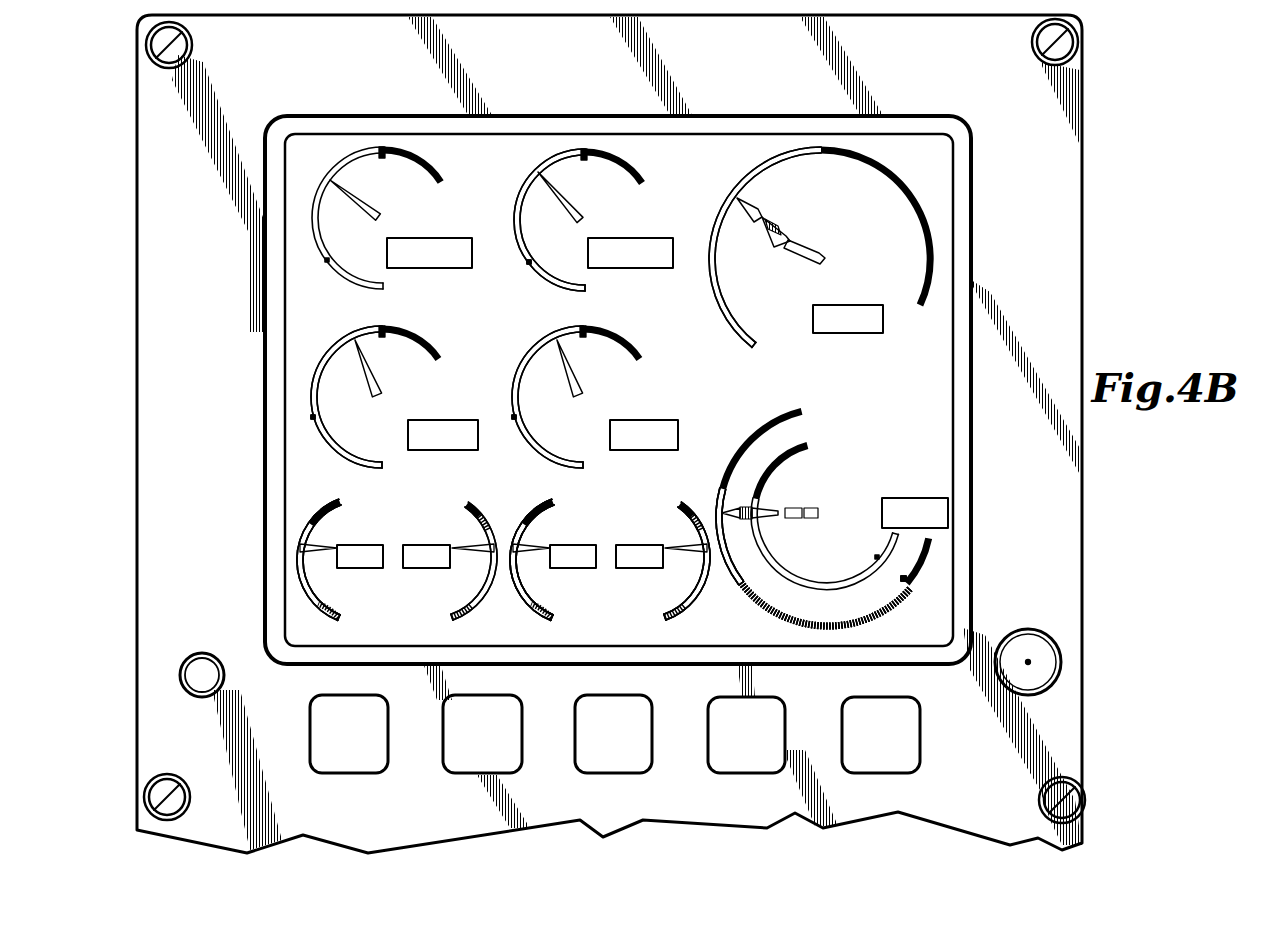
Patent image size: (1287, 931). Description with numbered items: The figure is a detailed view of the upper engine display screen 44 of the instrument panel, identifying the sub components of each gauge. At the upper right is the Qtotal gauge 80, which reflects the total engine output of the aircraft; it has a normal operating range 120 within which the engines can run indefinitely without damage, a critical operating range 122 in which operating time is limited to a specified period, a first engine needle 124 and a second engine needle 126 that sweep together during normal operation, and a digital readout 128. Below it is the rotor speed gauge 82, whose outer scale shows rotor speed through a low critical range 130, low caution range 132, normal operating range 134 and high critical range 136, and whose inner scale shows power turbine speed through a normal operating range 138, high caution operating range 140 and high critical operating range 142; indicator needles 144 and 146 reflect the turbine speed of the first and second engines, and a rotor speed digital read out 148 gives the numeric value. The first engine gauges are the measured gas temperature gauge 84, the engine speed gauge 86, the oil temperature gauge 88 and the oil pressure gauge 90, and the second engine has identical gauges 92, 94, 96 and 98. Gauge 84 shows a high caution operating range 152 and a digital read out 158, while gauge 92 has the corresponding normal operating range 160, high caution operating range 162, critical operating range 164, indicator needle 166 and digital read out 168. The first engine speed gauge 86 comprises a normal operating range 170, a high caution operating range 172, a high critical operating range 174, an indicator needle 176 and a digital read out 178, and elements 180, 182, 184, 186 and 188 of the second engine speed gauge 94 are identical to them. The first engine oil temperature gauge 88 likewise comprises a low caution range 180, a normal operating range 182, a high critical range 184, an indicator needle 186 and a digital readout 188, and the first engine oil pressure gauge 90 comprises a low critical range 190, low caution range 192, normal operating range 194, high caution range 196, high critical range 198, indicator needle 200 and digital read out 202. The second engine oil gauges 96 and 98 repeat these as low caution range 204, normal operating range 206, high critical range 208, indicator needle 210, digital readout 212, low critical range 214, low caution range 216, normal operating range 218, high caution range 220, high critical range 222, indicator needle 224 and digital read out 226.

The upper display screen 44 is at (1090, 116).
The Qtotal gauge 80 is at (890, 158).
The rotor speed gauge 82 is at (918, 590).
The first engine measured gas temperature gauge 84 is at (315, 182).
The first engine speed gauge 86 is at (318, 350).
The first engine oil temperature gauge 88 is at (300, 655).
The first engine oil pressure gauge 90 is at (470, 503).
The second engine measured gas temperature gauge 92 is at (512, 200).
The second engine speed gauge 94 is at (506, 378).
The second engine oil temperature gauge 96 is at (512, 528).
The second engine oil pressure gauge 98 is at (684, 503).
The normal operating range 120 is at (747, 170).
The critical operating range 122 is at (867, 150).
The first engine needle 124 is at (760, 200).
The second engine needle 126 is at (776, 217).
The digital readout 128 is at (884, 312).
The low critical range 130 is at (932, 557).
The low caution range 132 is at (888, 605).
The normal operating range 134 is at (722, 567).
The high critical range 136 is at (745, 434).
The normal operating range 138 is at (895, 535).
The high caution operating range 140 is at (757, 500).
The high critical operating range 142 is at (795, 443).
The indicator needle 144 is at (778, 510).
The indicator needle 146 is at (797, 518).
The rotor speed digital read out 148 is at (943, 500).
The high caution operating range 152 is at (382, 147).
The digital read out 158 is at (472, 250).
The normal operating range 160 is at (545, 158).
The high caution operating range 162 is at (585, 150).
The critical operating range 164 is at (608, 155).
The indicator needle 166 is at (562, 187).
The digital read out 168 is at (673, 245).
The normal operating range 170 is at (318, 433).
The high caution operating range 172 is at (380, 330).
The high critical operating range 174 is at (410, 332).
The indicator needle 176 is at (365, 382).
The digital read out 178 is at (460, 450).
The low caution range 180 is at (518, 372).
The normal operating range 182 is at (581, 330).
The high critical range 184 is at (572, 360).
The indicator needle 186 is at (621, 338).
The digital readout 188 is at (610, 435).
The low critical range 190 is at (470, 603).
The low caution range 192 is at (480, 565).
The normal operating range 194 is at (487, 552).
The high caution range 196 is at (338, 498).
The high critical range 198 is at (452, 497).
The indicator needle 200 is at (457, 572).
The digital read out 202 is at (430, 570).
The low caution range 204 is at (521, 590).
The normal operating range 206 is at (522, 585).
The high critical range 208 is at (536, 497).
The indicator needle 210 is at (540, 512).
The digital readout 212 is at (560, 570).
The low critical range 214 is at (670, 570).
The low caution range 216 is at (700, 585).
The normal operating range 218 is at (723, 525).
The high caution range 220 is at (722, 497).
The high critical range 222 is at (663, 518).
The indicator needle 224 is at (710, 552).
The digital read out 226 is at (620, 570).